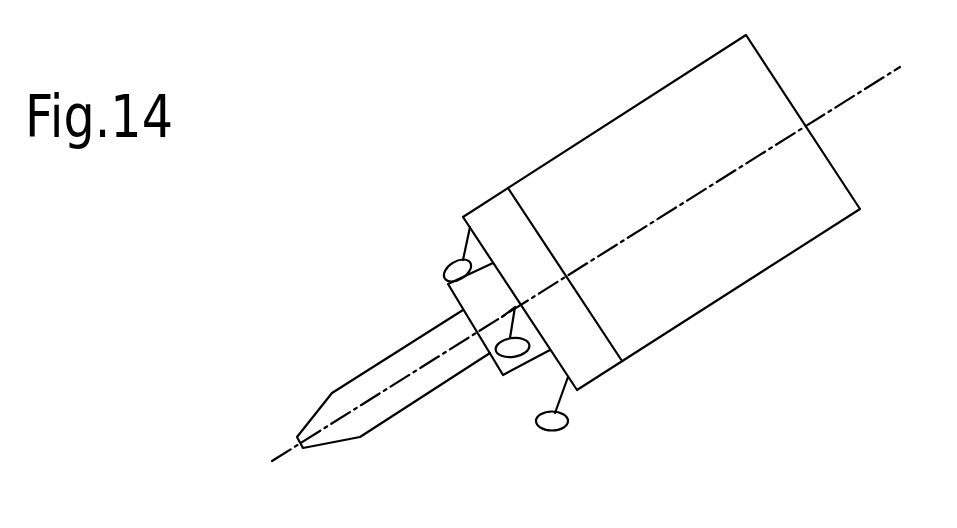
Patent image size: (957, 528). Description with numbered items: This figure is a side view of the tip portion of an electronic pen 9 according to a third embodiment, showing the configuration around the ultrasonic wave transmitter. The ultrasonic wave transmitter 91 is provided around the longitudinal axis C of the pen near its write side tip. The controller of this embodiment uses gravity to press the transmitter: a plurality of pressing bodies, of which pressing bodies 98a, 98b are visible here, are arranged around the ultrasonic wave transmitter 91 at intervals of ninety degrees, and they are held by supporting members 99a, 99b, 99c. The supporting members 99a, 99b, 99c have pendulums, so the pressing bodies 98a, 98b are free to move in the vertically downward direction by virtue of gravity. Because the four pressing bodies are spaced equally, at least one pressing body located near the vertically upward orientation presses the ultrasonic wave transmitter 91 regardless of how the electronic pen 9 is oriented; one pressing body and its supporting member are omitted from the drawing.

The electronic pen 9 is at (517, 88).
The longitudinal axis C is at (832, 110).
The ultrasonic wave transmitter 91 is at (513, 355).
The pressing body 98a is at (445, 264).
The pressing body 98b is at (502, 368).
The supporting member 99a is at (462, 247).
The supporting member 99b is at (502, 317).
The supporting member 99c is at (562, 395).